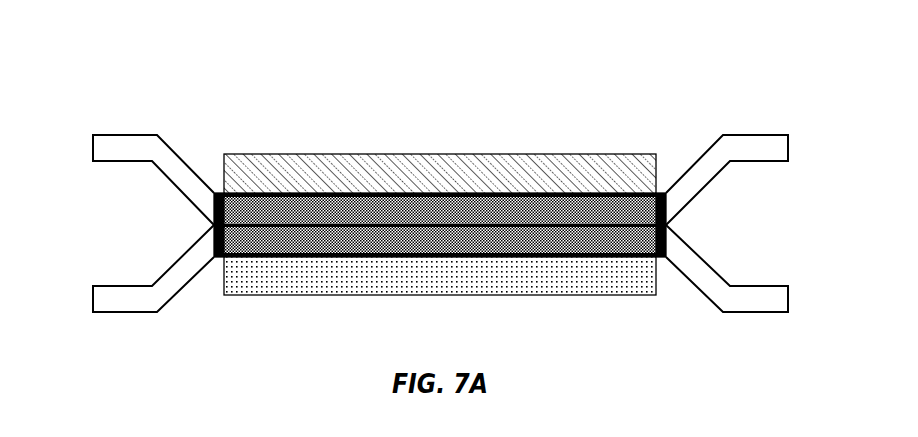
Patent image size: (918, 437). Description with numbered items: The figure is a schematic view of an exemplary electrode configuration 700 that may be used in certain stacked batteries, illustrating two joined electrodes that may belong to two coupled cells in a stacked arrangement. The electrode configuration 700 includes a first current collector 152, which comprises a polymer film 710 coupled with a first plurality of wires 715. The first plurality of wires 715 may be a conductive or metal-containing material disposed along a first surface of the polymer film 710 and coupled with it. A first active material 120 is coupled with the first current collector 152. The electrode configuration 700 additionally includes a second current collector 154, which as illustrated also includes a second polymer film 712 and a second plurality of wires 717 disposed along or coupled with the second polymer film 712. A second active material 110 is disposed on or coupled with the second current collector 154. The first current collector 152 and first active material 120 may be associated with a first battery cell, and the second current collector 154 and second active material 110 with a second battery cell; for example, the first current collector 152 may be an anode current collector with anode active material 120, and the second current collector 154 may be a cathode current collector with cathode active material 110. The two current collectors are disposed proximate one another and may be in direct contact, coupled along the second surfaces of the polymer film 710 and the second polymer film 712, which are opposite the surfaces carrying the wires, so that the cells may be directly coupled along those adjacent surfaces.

The electrode configuration 700 is at (116, 70).
The second active material 110 is at (562, 297).
The first active material 120 is at (433, 155).
The first current collector 152 is at (765, 133).
The second current collector 154 is at (765, 313).
The polymer film 710 is at (667, 208).
The second polymer film 712 is at (216, 245).
The first plurality of wires 715 is at (658, 191).
The second plurality of wires 717 is at (253, 256).